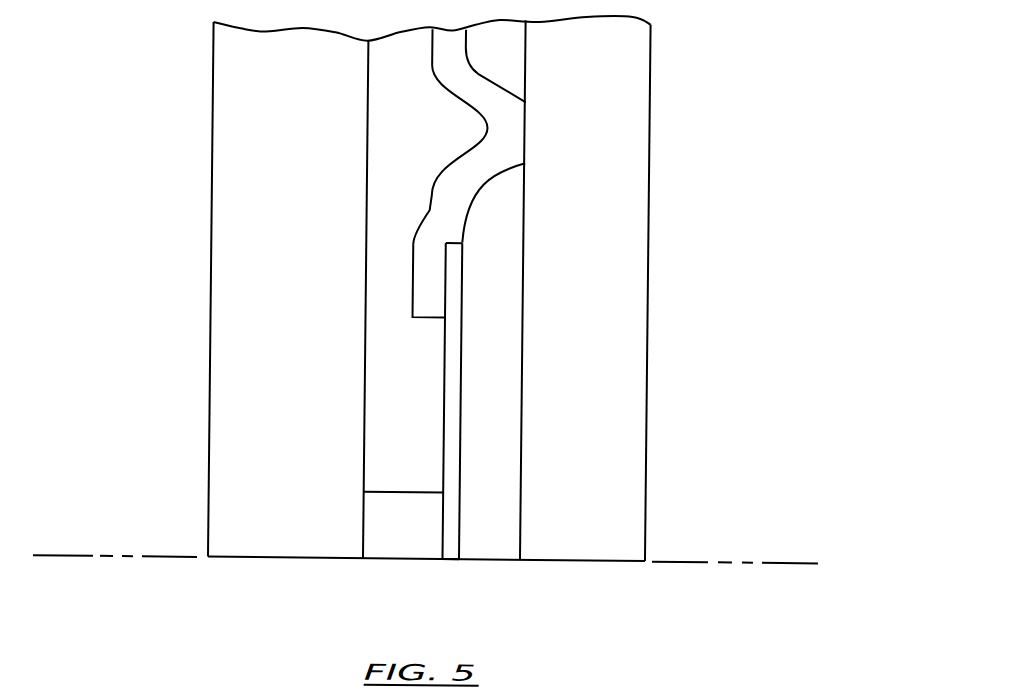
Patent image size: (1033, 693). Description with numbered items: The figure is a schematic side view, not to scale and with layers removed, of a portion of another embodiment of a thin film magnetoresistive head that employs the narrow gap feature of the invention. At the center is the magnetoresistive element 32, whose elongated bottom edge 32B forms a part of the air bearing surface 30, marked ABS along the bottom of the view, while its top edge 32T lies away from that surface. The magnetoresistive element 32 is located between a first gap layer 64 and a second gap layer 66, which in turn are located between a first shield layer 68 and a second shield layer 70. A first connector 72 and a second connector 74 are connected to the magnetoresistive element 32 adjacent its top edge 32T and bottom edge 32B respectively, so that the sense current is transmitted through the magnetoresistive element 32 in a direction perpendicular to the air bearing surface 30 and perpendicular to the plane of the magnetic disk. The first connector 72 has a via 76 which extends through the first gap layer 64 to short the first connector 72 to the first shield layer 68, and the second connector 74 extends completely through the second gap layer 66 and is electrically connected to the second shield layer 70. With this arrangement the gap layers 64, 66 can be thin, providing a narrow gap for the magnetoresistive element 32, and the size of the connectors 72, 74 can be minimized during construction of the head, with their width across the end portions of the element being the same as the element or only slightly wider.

The air bearing surface 30 is at (705, 558).
The magnetoresistive element 32 is at (460, 457).
The top edge of the magnetoresistive element 32T is at (454, 240).
The bottom edge of the magnetoresistive element 32B is at (450, 557).
The first gap layer 64 is at (482, 527).
The second gap layer 66 is at (381, 471).
The first shield layer 68 is at (613, 323).
The second shield layer 70 is at (253, 326).
The first connector 72 is at (429, 266).
The second connector 74 is at (378, 545).
The via 76 is at (506, 127).
The air bearing surface ABS is at (120, 561).